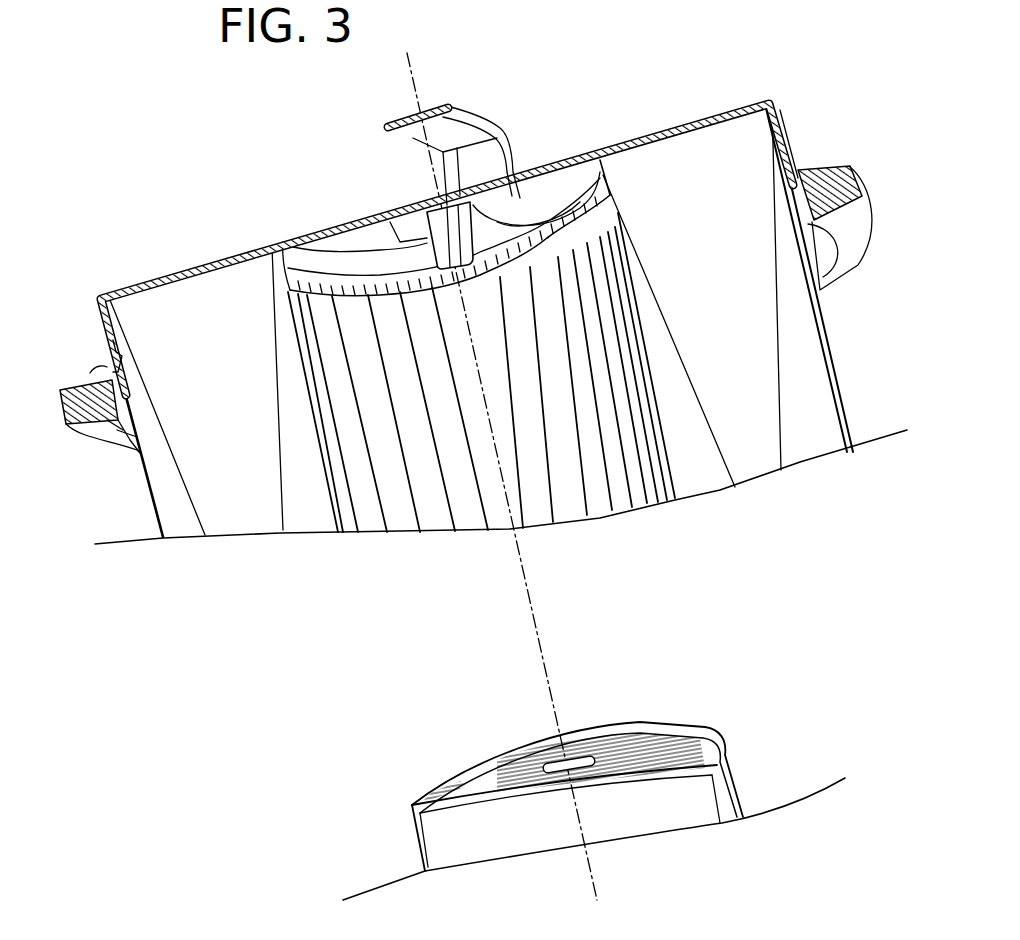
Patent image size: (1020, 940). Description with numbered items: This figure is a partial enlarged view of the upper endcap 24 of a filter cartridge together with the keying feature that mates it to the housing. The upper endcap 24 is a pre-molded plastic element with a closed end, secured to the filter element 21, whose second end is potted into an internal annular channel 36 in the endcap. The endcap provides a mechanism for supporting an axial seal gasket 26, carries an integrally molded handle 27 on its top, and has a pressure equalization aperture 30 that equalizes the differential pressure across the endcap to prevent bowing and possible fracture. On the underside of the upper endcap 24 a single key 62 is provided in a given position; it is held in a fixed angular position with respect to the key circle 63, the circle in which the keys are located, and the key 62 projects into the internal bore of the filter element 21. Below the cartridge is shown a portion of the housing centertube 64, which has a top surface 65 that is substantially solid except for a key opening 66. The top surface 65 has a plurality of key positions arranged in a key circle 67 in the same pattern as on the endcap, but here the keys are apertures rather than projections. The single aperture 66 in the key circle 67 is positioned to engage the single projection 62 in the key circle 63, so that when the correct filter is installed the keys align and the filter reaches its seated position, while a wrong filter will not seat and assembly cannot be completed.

The filter element 21 is at (813, 363).
The upper endcap 24 is at (663, 130).
The axial seal gasket 26 is at (852, 173).
The handle 27 is at (431, 103).
The pressure equalization aperture 30 is at (112, 343).
The internal annular channel 36 is at (193, 300).
The key 62 is at (390, 252).
The key circle 63 is at (527, 227).
The housing centertube 64 is at (731, 777).
The top surface 65 is at (667, 750).
The key opening 66 is at (580, 760).
The key circle 67 is at (455, 790).